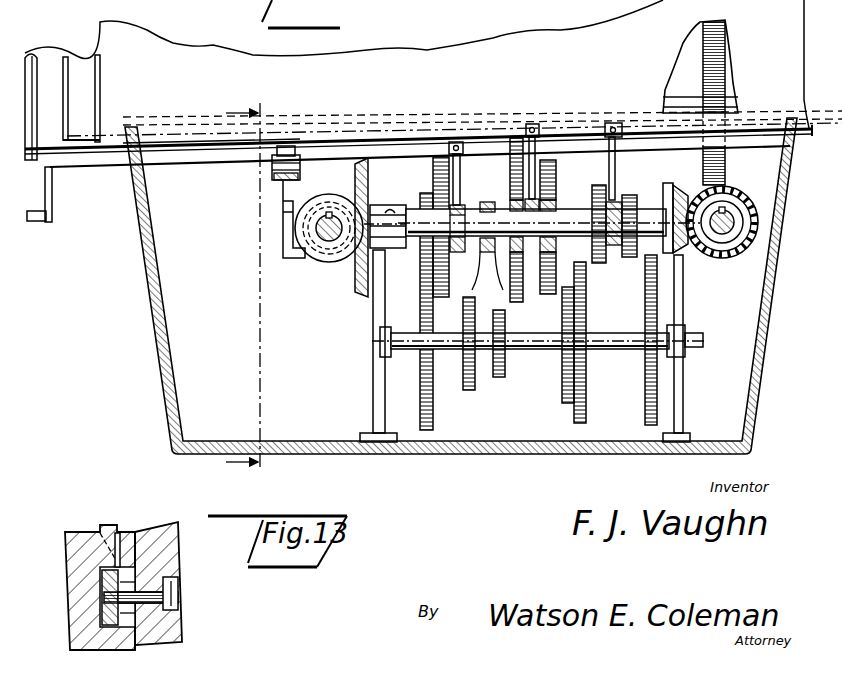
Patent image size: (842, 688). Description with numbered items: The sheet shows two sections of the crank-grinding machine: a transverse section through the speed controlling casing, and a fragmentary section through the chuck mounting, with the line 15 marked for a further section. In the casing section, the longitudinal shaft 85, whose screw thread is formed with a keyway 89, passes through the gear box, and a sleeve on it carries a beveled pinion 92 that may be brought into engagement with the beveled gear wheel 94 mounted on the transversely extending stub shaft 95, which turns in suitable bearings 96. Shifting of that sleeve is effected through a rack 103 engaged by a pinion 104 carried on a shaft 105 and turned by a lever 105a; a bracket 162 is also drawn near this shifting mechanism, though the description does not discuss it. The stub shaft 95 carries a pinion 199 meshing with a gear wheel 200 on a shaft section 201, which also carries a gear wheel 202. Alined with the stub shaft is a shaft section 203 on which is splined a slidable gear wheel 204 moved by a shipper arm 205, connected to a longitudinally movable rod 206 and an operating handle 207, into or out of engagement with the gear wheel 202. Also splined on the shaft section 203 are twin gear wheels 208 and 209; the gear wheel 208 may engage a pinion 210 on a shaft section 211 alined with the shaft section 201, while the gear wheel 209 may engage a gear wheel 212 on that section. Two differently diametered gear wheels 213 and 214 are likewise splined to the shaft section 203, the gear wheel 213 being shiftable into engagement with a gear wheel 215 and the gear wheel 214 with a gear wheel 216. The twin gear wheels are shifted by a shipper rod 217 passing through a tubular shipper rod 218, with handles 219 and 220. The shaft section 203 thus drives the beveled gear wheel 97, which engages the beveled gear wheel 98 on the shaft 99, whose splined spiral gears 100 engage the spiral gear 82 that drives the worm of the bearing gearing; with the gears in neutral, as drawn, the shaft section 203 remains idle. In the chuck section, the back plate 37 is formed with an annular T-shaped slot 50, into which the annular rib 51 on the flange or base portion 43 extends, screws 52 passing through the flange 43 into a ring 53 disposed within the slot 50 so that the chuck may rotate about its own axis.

In FIG. 13, the section line 15- 15 is at (249, 290).
In FIG. 14, the back plate 37 is at (85, 532).
In FIG. 14, the flange or base portion 43 is at (182, 553).
In FIG. 14, the annular T-shaped slot 50 is at (110, 637).
In FIG. 14, the annular rib 51 is at (121, 545).
In FIG. 14, the screws 52 is at (152, 593).
In FIG. 14, the ring 53 is at (103, 568).
In FIG. 13, the spiral gear 82 is at (726, 66).
In FIG. 13, the shaft 85 is at (330, 214).
In FIG. 13, the keyway 89 is at (150, 303).
In FIG. 13, the beveled pinion 92 is at (322, 255).
In FIG. 13, the beveled gear wheel 94 is at (356, 283).
In FIG. 13, the transversely extending shaft 95 is at (412, 214).
In FIG. 13, the bearings 96 is at (374, 316).
In FIG. 13, the beveled gear wheel 97 is at (683, 184).
In FIG. 13, the beveled gear wheel 98 is at (722, 259).
In FIG. 13, the shaft 99 is at (724, 213).
In FIG. 13, the spiral gears 100 is at (757, 236).
In FIG. 13, the rack 103 is at (276, 176).
In FIG. 13, the pinion 104 is at (290, 156).
In FIG. 13, the shaft 105 is at (180, 168).
In FIG. 13, the lever 105a is at (40, 222).
In FIG. 13, the bracket 162 is at (282, 197).
In FIG. 13, the pinion 199 is at (428, 196).
In FIG. 13, the gear wheel 200 is at (433, 413).
In FIG. 13, the shaft section 201 is at (403, 357).
In FIG. 13, the gear wheel 202 is at (476, 386).
In FIG. 13, the shaft section 203 is at (582, 237).
In FIG. 13, the slidable gear wheel 204 is at (457, 142).
In FIG. 13, the shipper arm 205 is at (463, 172).
In FIG. 13, the longitudinally movable rod 206 is at (205, 150).
In FIG. 13, the operating handle 207 is at (38, 60).
In FIG. 13, the gear wheel 208 is at (538, 140).
In FIG. 13, the gear wheel 209 is at (550, 162).
In FIG. 13, the pinion 210 is at (506, 368).
In FIG. 13, the shaft section 211 is at (614, 340).
In FIG. 13, the gear wheel 212 is at (567, 402).
In FIG. 13, the gear wheel 213 is at (598, 179).
In FIG. 13, the pinion or gear wheel 214 is at (630, 195).
In FIG. 13, the gear wheel 215 is at (587, 408).
In FIG. 13, the gear wheel 216 is at (654, 430).
In FIG. 13, the shipper rod 217 is at (648, 130).
In FIG. 13, the tubular shipper rod 218 is at (278, 137).
In FIG. 13, the handle 219 is at (68, 57).
In FIG. 13, the handle 220 is at (102, 86).